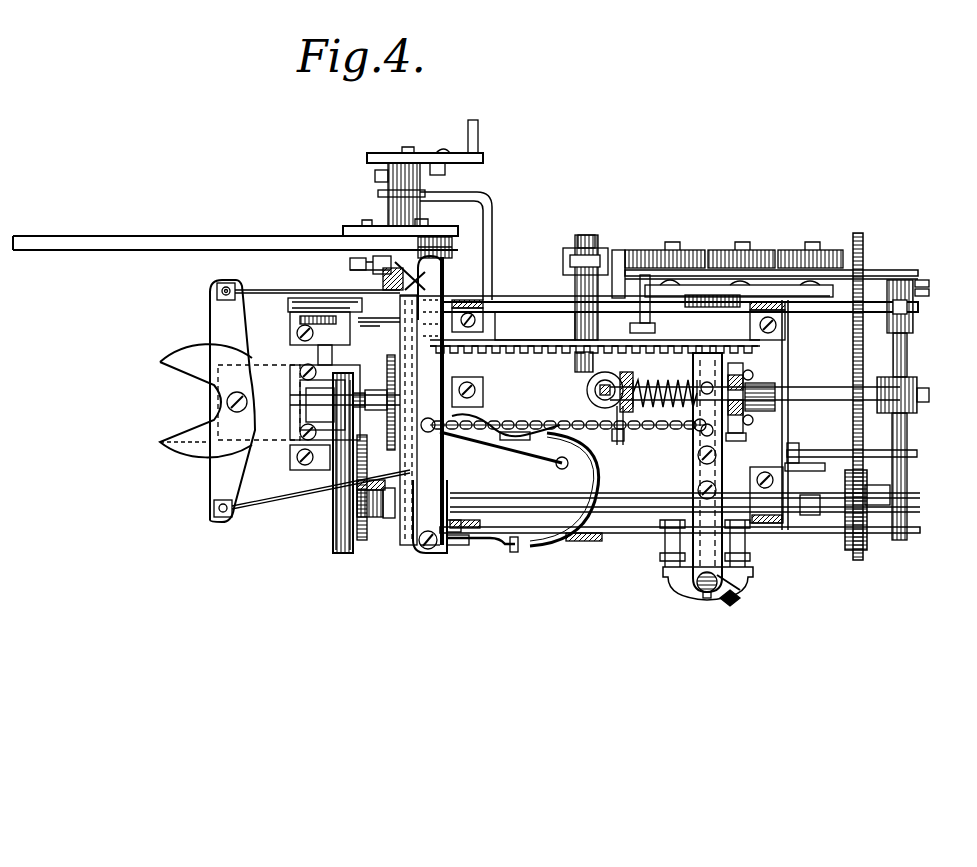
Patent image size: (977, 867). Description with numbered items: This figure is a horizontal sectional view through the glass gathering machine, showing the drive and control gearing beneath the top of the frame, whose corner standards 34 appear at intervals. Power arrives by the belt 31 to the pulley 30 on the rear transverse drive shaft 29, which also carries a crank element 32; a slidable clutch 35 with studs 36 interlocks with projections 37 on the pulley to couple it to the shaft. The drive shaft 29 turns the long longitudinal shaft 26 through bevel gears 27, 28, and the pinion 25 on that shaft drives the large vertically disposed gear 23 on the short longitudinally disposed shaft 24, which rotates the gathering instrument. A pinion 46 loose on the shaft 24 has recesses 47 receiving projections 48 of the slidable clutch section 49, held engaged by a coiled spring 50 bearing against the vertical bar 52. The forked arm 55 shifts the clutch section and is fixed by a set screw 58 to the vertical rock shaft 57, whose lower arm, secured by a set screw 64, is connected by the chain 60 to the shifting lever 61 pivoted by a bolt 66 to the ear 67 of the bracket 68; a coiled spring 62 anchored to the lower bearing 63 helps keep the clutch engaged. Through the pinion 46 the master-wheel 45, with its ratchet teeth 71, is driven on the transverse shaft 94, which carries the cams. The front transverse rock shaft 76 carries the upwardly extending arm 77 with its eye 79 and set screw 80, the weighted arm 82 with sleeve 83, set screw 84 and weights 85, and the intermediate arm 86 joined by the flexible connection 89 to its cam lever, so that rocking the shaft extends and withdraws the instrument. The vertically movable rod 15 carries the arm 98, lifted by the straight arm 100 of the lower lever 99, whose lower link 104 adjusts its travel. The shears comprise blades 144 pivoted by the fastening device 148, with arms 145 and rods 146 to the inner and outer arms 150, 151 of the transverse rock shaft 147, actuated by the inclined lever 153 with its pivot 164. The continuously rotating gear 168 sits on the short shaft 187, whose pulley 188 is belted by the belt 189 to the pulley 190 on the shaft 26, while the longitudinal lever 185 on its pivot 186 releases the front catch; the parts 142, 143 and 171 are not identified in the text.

The vertically disposed rod 15 is at (592, 397).
The large vertically disposed gear 23 is at (860, 240).
The short longitudinally disposed shaft 24 is at (640, 378).
The pinion 25 is at (863, 540).
The long longitudinal shaft 26 is at (665, 494).
The bevel gear 27 is at (363, 542).
The bevel gear 28 is at (366, 478).
The rear transverse drive shaft 29 is at (413, 290).
The pulley 30 is at (348, 238).
The belt 31 is at (117, 250).
The crank element 32 is at (483, 157).
The corner standards 34 is at (485, 325).
The slidable clutch 35 is at (405, 282).
The projections or studs 36 is at (374, 272).
The projections 37 is at (352, 265).
The master-wheel 45 is at (508, 350).
The pinion 46 is at (738, 442).
The recesses 47 is at (756, 372).
The projections 48 is at (740, 366).
The slidable clutch section 49 is at (708, 318).
The coiled spring 50 is at (668, 409).
The vertical bar or member 52 is at (625, 440).
The forked arm 55 is at (708, 472).
The vertical rock shaft or pivot 57 is at (704, 594).
The set screw 58 is at (709, 600).
The chain 60 is at (512, 428).
The shifting lever 61 is at (436, 262).
The coiled spring 62 is at (735, 590).
The lower bearing 63 is at (685, 590).
The set screw 64 is at (738, 602).
The bolt 66 is at (427, 552).
The projecting ear or flange 67 is at (412, 550).
The bracket 68 is at (445, 556).
The ratchet teeth 71 is at (545, 338).
The front transverse rock shaft 76 is at (907, 480).
The upwardly extending arm 77 is at (893, 360).
The eye 79 is at (912, 410).
The set screw 80 is at (929, 395).
The weighted arm 82 is at (880, 270).
The sleeve 83 is at (913, 310).
The set screw 84 is at (929, 284).
The weights 85 is at (706, 268).
The rearwardly extending arm 86 is at (835, 448).
The flexible connection 89 is at (796, 464).
The transverse shaft 94 is at (575, 364).
The laterally extending arm 98 is at (616, 442).
The lower lever 99 is at (535, 548).
The straight arm 100 is at (562, 420).
The lower link 104 is at (512, 554).
The block 142 is at (292, 420).
The block 143 is at (290, 465).
The blades or jaws 144 is at (185, 400).
The laterally extending arms 145 is at (210, 333).
The inwardly extending rods 146 is at (248, 285).
The transverse rock shaft 147 is at (425, 390).
The fastening device 148 is at (240, 396).
The inner arm 150 is at (485, 472).
The outer arm 151 is at (421, 281).
The inclined lever 153 is at (652, 325).
The pivot 164 is at (563, 272).
The continuously rotating gear 168 is at (388, 370).
The bracket 171 is at (306, 300).
The longitudinally disposed lever 185 is at (617, 285).
The pivot 186 is at (739, 291).
The short longitudinally disposed shaft 187 is at (375, 393).
The pulley 188 is at (333, 370).
The belt 189 is at (343, 555).
The pulley 190 is at (334, 548).